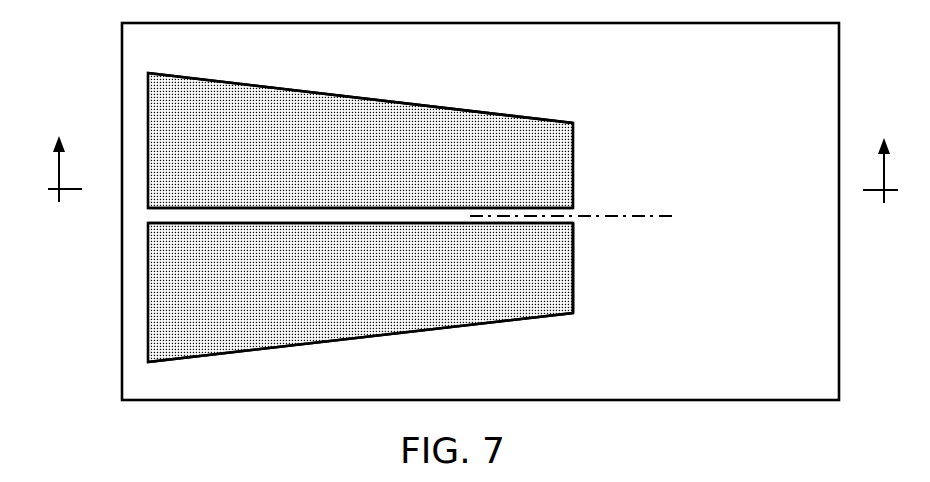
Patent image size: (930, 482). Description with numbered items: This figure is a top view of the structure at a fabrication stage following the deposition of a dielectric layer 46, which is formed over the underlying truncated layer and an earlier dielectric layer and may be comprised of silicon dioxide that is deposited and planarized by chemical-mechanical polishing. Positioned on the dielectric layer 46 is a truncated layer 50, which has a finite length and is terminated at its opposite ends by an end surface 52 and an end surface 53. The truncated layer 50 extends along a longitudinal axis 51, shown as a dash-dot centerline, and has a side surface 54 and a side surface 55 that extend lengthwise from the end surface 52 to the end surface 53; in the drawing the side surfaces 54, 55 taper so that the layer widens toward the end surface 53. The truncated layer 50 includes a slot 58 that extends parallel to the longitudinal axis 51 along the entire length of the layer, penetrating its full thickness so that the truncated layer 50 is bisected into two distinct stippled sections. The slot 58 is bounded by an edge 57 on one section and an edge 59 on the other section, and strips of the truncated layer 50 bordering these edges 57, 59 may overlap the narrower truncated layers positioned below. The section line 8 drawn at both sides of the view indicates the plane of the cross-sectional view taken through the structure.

The section line 8 is at (473, 151).
The dielectric layer 46 is at (727, 317).
The truncated layer 50 is at (345, 132).
The longitudinal axis 51 is at (620, 216).
The end surface 52 is at (147, 272).
The end surface 53 is at (574, 270).
The side surface 54 is at (470, 108).
The side surface 55 is at (520, 318).
The edge 57 is at (320, 208).
The slot 58 is at (350, 213).
The edge 59 is at (323, 223).